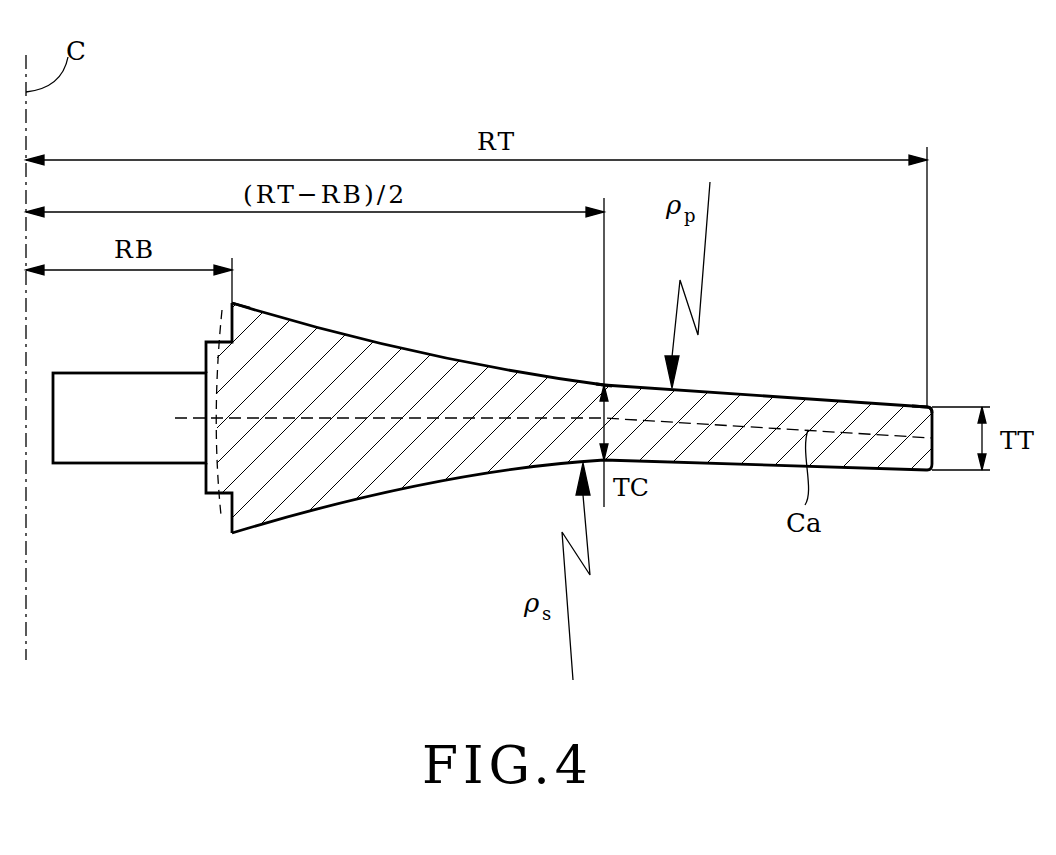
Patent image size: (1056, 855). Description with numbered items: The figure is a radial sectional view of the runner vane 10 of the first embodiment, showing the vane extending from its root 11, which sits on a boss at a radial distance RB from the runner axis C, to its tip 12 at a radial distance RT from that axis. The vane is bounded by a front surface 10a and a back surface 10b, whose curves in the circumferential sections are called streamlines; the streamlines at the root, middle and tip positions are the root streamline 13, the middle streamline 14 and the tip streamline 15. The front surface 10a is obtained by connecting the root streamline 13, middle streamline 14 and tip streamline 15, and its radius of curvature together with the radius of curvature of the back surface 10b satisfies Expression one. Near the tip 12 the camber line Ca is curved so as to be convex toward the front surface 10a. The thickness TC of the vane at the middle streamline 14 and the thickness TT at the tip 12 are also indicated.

The runner vane 10 is at (984, 126).
The front surface 10a is at (417, 352).
The back surface 10b is at (450, 483).
The root 11 is at (232, 527).
The tip 12 is at (933, 455).
The root streamline 13 is at (235, 302).
The middle streamline 14 is at (604, 385).
The tip streamline 15 is at (927, 407).